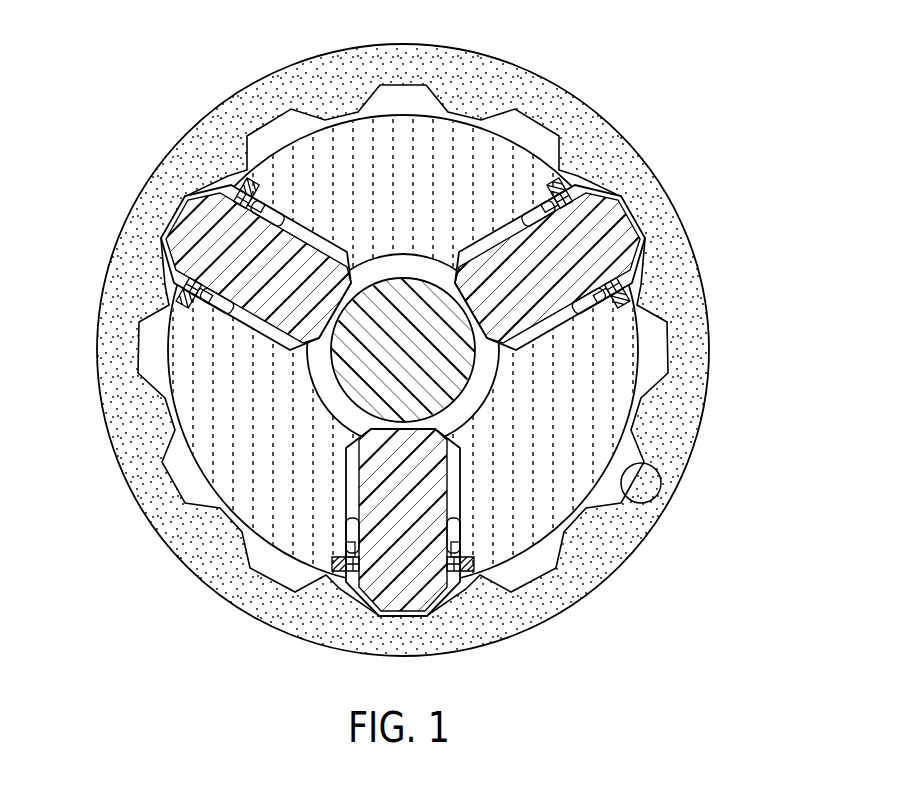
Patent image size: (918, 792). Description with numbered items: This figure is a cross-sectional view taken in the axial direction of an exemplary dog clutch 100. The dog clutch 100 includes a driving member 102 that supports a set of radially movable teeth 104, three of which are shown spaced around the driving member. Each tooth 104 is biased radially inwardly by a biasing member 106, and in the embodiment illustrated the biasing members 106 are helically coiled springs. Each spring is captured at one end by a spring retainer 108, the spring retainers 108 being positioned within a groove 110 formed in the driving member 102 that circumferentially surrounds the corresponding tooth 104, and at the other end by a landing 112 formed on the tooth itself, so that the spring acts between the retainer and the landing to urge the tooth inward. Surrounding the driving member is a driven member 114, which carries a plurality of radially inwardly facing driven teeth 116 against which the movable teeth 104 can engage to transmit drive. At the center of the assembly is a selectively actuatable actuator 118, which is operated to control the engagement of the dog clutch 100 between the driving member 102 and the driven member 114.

The dog clutch 100 is at (748, 58).
The driving member 102 is at (573, 415).
The radially movable tooth 104 is at (163, 242).
The biasing member 106 is at (263, 200).
The spring retainer 108 is at (247, 173).
The groove 110 is at (553, 180).
The landing 112 is at (522, 213).
The driven member 114 is at (702, 425).
The driven tooth 116 is at (655, 505).
The actuator 118 is at (360, 385).